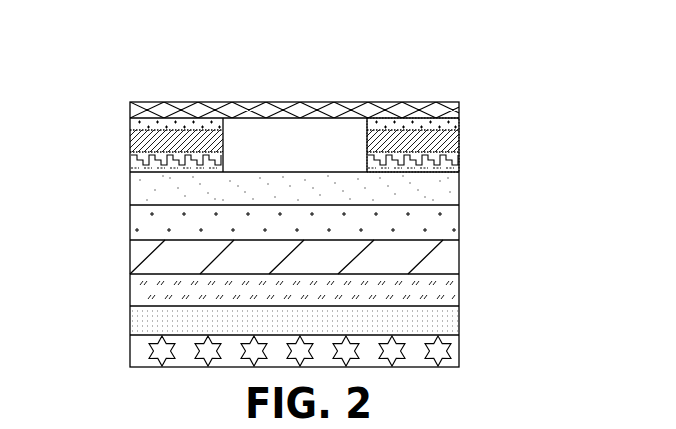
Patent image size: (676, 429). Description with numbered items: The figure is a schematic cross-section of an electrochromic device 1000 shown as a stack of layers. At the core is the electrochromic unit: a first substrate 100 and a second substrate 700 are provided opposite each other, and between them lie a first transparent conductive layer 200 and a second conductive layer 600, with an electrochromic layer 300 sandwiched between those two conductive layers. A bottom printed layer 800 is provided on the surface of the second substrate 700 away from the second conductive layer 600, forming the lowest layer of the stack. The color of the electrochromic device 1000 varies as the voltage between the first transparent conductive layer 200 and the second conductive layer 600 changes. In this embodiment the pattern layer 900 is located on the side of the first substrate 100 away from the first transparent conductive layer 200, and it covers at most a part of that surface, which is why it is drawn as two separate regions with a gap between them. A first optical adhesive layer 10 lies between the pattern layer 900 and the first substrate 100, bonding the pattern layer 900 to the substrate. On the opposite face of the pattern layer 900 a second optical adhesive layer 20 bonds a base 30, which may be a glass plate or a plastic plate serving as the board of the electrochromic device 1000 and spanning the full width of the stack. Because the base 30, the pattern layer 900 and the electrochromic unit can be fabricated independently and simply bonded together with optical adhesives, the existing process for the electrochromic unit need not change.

The electrochromic device 1000 is at (322, 70).
The base 30 is at (130, 110).
The second optical adhesive layer 20 is at (130, 130).
The first optical adhesive layer 10 is at (130, 162).
The pattern layer 900 is at (459, 140).
The first substrate 100 is at (443, 195).
The first transparent conductive layer 200 is at (443, 228).
The electrochromic layer 300 is at (443, 262).
The second conductive layer 600 is at (443, 297).
The second substrate 700 is at (440, 327).
The bottom printed layer 800 is at (455, 355).